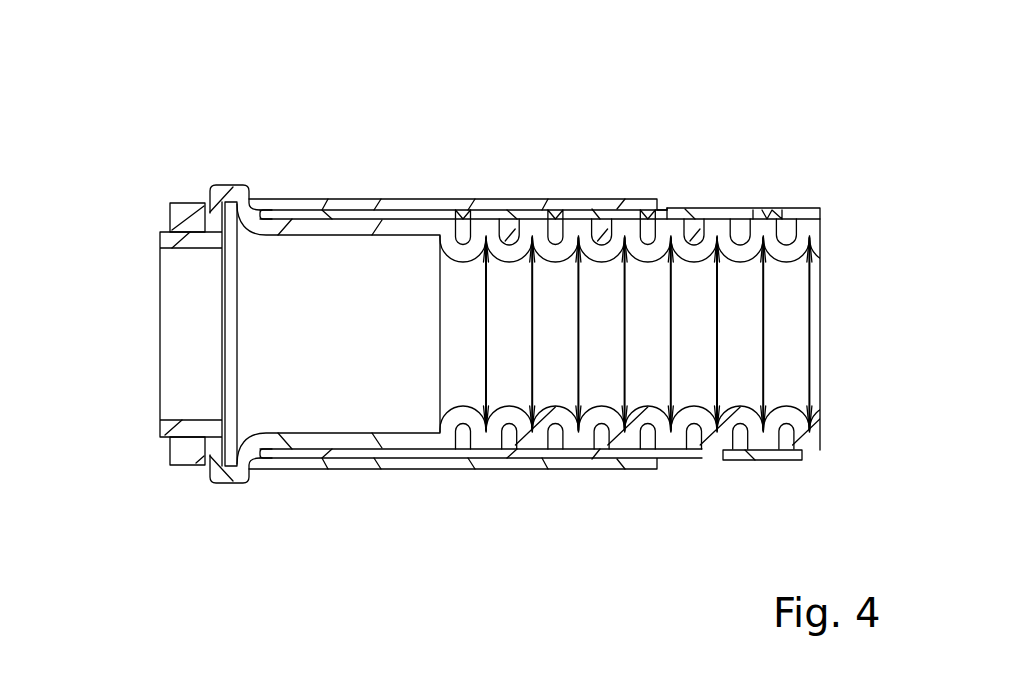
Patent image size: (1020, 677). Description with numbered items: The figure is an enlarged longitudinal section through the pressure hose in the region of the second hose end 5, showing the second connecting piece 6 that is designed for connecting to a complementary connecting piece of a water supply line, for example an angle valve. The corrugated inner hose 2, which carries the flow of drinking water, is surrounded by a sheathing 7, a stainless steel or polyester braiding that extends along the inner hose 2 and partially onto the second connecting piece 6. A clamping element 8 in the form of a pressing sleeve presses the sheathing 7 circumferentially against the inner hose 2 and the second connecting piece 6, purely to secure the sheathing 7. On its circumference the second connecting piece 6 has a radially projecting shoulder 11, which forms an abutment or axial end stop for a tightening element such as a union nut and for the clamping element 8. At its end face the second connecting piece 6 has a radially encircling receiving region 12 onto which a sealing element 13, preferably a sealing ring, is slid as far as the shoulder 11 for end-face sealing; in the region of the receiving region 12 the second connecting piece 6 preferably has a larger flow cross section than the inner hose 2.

The corrugated inner hose 2 is at (716, 226).
The second hose end 5 is at (88, 150).
The second connecting piece 6 is at (151, 167).
The sheathing 7 is at (775, 210).
The clamping element 8 is at (381, 199).
The radially projecting shoulder 11 is at (227, 187).
The receiving region 12 is at (190, 249).
The sealing element 13 is at (182, 220).